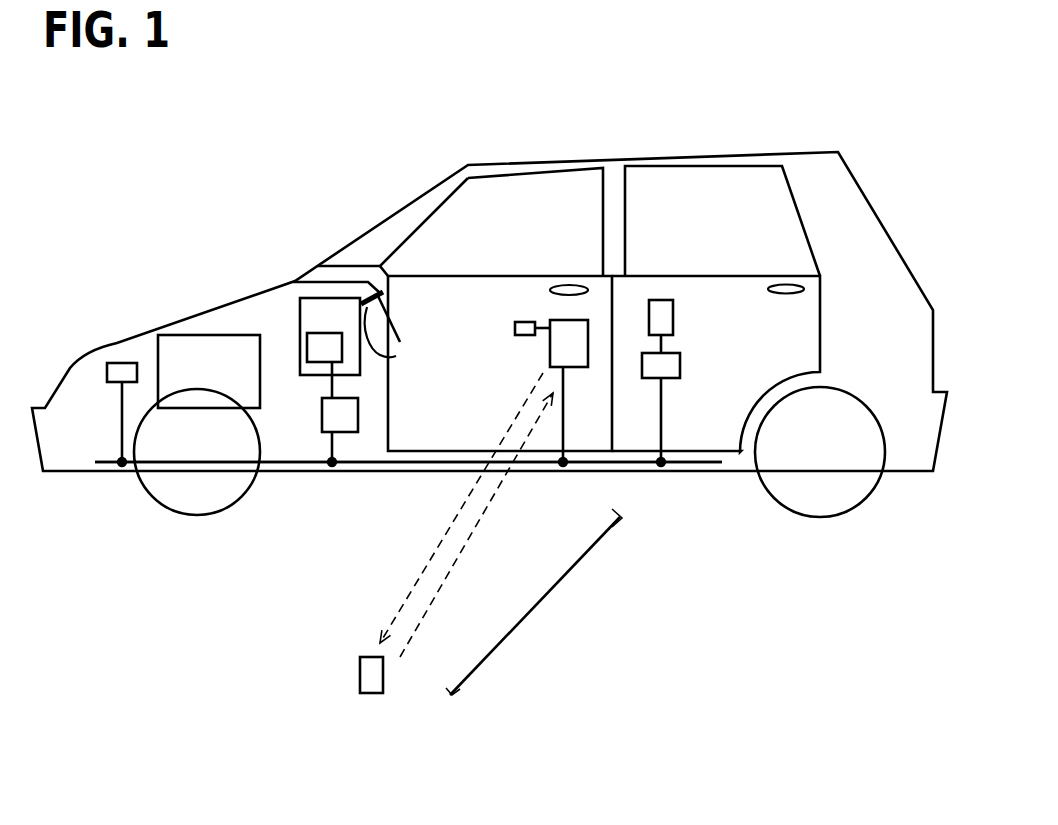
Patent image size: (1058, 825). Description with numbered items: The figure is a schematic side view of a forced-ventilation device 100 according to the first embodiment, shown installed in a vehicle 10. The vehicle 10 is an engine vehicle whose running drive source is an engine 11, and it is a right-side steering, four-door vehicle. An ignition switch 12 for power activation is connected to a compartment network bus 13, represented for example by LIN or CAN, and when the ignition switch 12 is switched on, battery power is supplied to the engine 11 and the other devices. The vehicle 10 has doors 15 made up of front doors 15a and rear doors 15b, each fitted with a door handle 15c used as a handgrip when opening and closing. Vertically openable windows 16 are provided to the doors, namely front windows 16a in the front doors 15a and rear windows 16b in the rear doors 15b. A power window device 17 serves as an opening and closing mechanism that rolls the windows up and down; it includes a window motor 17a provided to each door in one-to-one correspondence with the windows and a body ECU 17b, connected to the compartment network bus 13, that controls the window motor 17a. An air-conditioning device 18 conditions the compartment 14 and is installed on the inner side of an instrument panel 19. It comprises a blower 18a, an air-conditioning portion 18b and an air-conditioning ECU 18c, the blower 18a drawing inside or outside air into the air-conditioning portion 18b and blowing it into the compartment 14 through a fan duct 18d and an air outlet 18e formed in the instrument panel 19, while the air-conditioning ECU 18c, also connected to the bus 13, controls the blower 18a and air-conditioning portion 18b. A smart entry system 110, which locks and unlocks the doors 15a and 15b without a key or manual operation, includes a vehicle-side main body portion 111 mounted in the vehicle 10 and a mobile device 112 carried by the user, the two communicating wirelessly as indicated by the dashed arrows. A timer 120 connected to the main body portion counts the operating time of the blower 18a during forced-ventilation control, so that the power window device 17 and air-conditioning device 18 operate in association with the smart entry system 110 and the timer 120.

The vehicle 10 is at (393, 211).
The engine 11 is at (190, 335).
The ignition switch 12 is at (122, 363).
The compartment network bus 13 is at (270, 471).
The compartment 14 is at (443, 230).
The doors 15 is at (595, 400).
The front doors 15a is at (430, 430).
The rear doors 15b is at (717, 430).
The door handles 15c is at (566, 285).
The windows 16 is at (640, 187).
The front windows 16a is at (493, 197).
The rear windows 16b is at (647, 198).
The power window device 17 is at (692, 369).
The window motor 17a is at (673, 331).
The body ECU 17b is at (680, 366).
The air-conditioning device 18 is at (352, 357).
The blower 18a is at (307, 344).
The air-conditioning portion 18b is at (300, 312).
The air-conditioning ECU 18c is at (323, 432).
The fan duct 18d is at (396, 356).
The air outlet 18e is at (388, 292).
The instrument panel 19 is at (396, 328).
The forced-ventilation device 100 is at (638, 481).
The smart entry system 110 is at (537, 607).
The vehicle-side main body portion 111 is at (580, 368).
The mobile device 112 is at (383, 672).
The timer 120 is at (515, 328).